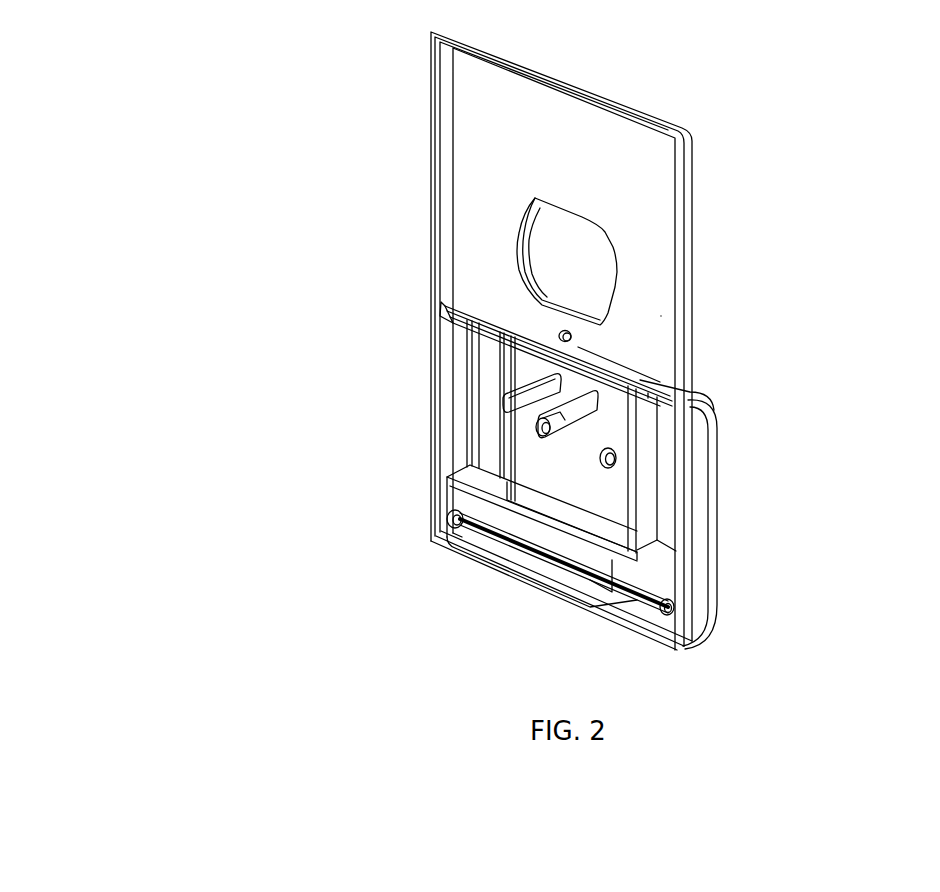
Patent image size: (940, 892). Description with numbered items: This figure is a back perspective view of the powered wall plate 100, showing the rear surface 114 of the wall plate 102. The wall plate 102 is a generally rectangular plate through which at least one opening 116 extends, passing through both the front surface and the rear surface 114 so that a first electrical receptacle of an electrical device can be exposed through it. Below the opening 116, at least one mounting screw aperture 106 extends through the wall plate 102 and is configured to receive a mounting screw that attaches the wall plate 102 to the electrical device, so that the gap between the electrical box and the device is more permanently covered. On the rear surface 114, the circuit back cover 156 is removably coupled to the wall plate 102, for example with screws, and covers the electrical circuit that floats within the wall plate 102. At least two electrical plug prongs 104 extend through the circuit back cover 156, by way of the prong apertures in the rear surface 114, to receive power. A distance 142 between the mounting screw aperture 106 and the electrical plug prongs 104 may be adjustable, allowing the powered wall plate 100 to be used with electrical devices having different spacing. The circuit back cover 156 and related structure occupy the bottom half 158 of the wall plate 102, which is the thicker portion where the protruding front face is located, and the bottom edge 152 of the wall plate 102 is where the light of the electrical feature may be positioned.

The powered wall plate 100 is at (296, 236).
The wall plate 102 is at (566, 162).
The electrical plug prongs 104 is at (573, 418).
The mounting screw aperture 106 is at (560, 338).
The rear surface 114 is at (661, 316).
The opening 116 is at (589, 271).
The distance 142 is at (572, 342).
The bottom edge 152 is at (557, 597).
The circuit back cover 156 is at (570, 485).
The bottom half 158 is at (697, 567).